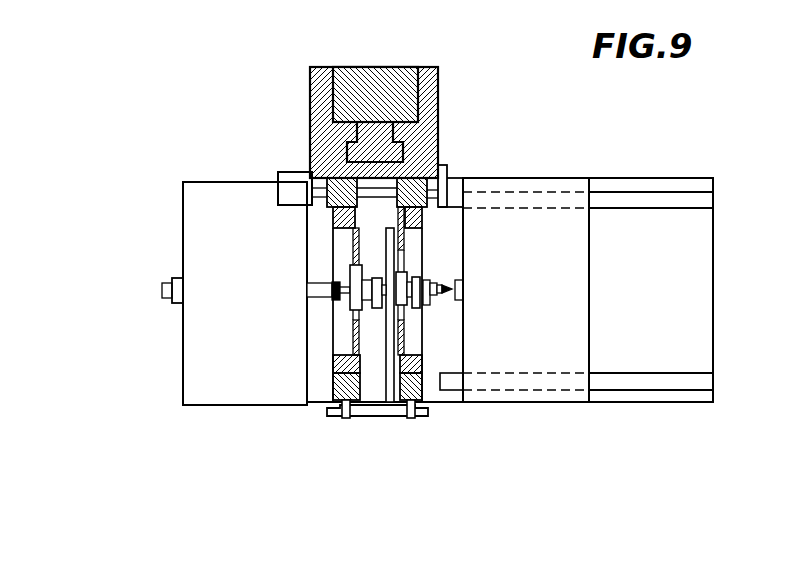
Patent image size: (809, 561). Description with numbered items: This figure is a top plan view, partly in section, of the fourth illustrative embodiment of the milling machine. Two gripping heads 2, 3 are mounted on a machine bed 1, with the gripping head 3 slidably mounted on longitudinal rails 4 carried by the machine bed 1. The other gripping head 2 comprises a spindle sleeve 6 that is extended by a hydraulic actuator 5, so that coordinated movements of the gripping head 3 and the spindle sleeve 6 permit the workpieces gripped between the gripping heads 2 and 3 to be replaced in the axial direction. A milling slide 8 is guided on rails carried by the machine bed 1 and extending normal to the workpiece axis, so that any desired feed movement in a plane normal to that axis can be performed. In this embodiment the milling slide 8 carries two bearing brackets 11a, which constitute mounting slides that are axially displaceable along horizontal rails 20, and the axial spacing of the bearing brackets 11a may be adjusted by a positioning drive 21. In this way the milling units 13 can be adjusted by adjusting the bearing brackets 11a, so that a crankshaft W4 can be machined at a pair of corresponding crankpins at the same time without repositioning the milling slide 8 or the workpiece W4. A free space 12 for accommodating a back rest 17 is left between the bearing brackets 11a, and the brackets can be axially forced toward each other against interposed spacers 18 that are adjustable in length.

The machine bed 1 is at (690, 267).
The gripping head 2 is at (203, 342).
The gripping head 3 is at (552, 352).
The longitudinal rails 4 is at (645, 202).
The hydraulic actuator 5 is at (162, 288).
The spindle sleeve 6 is at (325, 293).
The milling slide 8 is at (307, 99).
The bearing brackets 11a is at (470, 445).
The free space 12 is at (375, 217).
The milling units 13 is at (502, 240).
The back rest 17 is at (392, 250).
The spacers 18 is at (377, 414).
The horizontal rails 20 is at (373, 187).
The positioning drive 21 is at (295, 192).
The crankshaft W4 is at (428, 307).